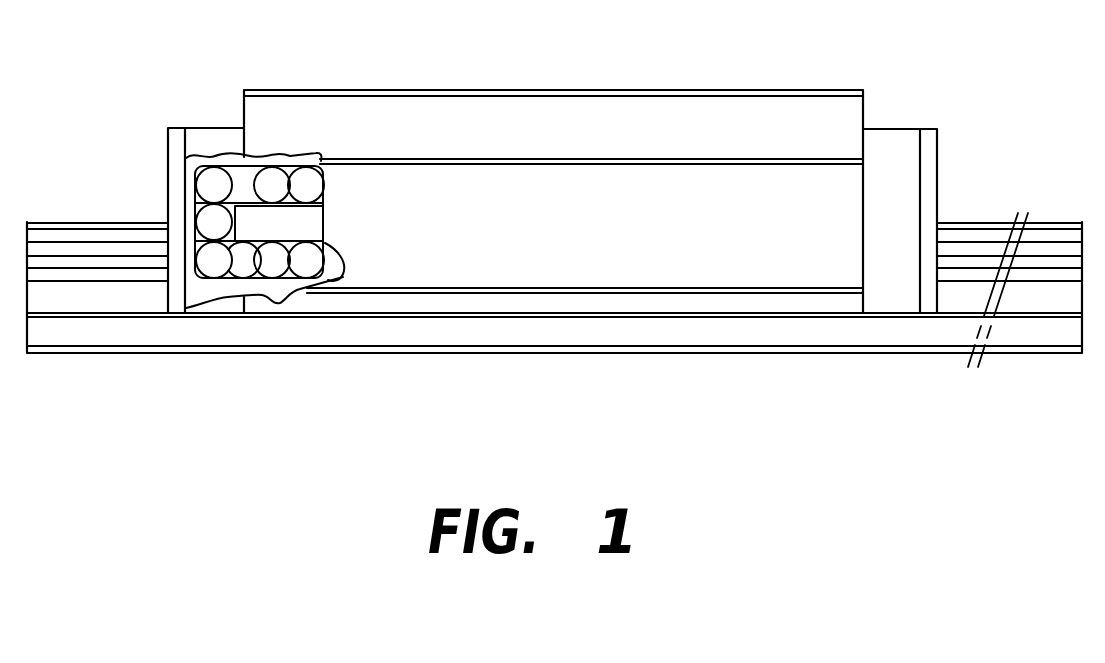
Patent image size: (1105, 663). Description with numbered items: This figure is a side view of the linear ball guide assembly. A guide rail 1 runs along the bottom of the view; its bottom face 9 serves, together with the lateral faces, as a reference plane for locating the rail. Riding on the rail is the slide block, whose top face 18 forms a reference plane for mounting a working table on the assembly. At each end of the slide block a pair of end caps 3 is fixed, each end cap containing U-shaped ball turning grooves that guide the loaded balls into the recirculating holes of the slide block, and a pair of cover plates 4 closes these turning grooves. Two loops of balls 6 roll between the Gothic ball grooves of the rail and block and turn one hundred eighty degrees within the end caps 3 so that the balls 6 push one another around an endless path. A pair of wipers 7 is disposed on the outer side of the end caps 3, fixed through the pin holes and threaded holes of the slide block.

The guide rail 1 is at (105, 328).
The end caps 3 is at (200, 157).
The cover plates 4 is at (238, 217).
The balls 6 is at (273, 267).
The wipers 7 is at (176, 195).
The bottom face 9 is at (437, 353).
The top face 18 is at (728, 90).